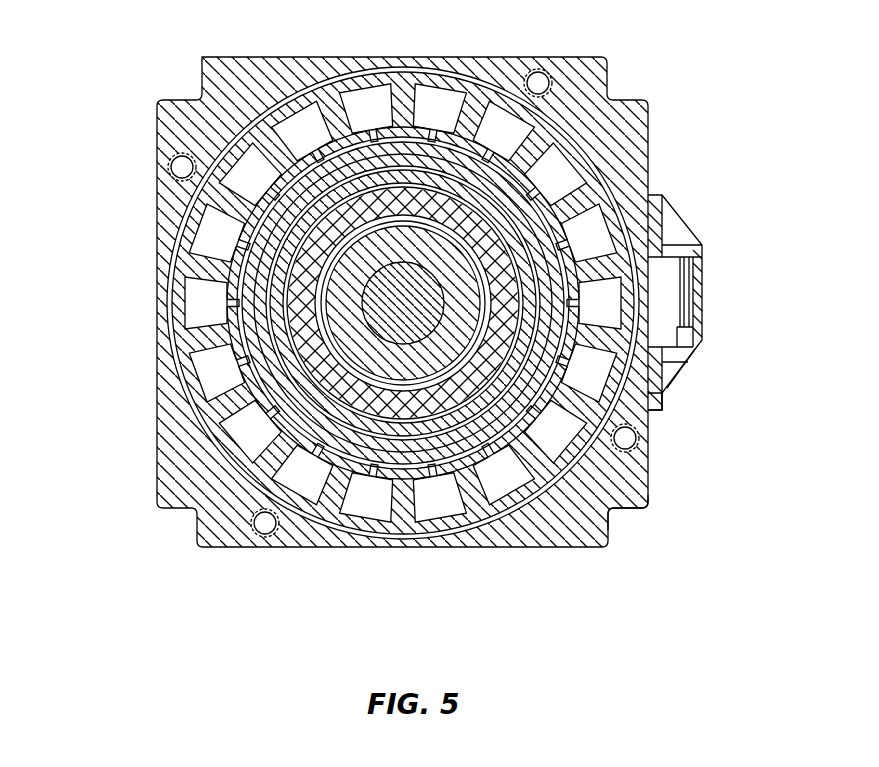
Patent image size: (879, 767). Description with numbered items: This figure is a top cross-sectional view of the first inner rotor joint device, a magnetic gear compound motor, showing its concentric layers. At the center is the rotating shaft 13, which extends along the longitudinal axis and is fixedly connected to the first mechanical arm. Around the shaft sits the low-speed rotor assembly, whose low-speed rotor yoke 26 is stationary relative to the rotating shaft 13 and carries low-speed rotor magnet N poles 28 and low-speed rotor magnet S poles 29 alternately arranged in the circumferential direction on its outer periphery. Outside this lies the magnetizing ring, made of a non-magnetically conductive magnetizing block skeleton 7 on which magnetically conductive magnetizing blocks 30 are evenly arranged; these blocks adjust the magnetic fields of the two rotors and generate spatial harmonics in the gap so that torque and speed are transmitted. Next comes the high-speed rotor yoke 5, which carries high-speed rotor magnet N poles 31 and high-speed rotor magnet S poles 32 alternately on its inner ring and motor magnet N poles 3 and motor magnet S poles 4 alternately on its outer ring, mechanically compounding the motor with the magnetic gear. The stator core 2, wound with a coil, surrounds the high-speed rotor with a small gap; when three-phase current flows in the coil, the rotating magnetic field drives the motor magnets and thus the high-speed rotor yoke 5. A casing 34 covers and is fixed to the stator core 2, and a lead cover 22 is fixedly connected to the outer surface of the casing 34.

The stator core 2 is at (185, 265).
The motor magnet N poles 3 is at (225, 360).
The motor magnet S poles 4 is at (265, 410).
The high-speed rotor yoke 5 is at (330, 445).
The magnetizing block skeleton 7 is at (560, 437).
The rotating shaft 13 is at (560, 188).
The lead cover 22 is at (700, 245).
The low-speed rotor yoke 26 is at (368, 295).
The low-speed rotor magnet N poles 28 is at (405, 225).
The low-speed rotor magnet S poles 29 is at (362, 205).
The magnetizing blocks 30 is at (598, 495).
The high-speed rotor magnet N poles 31 is at (560, 375).
The high-speed rotor magnet S poles 32 is at (555, 255).
The casing 34 is at (640, 400).